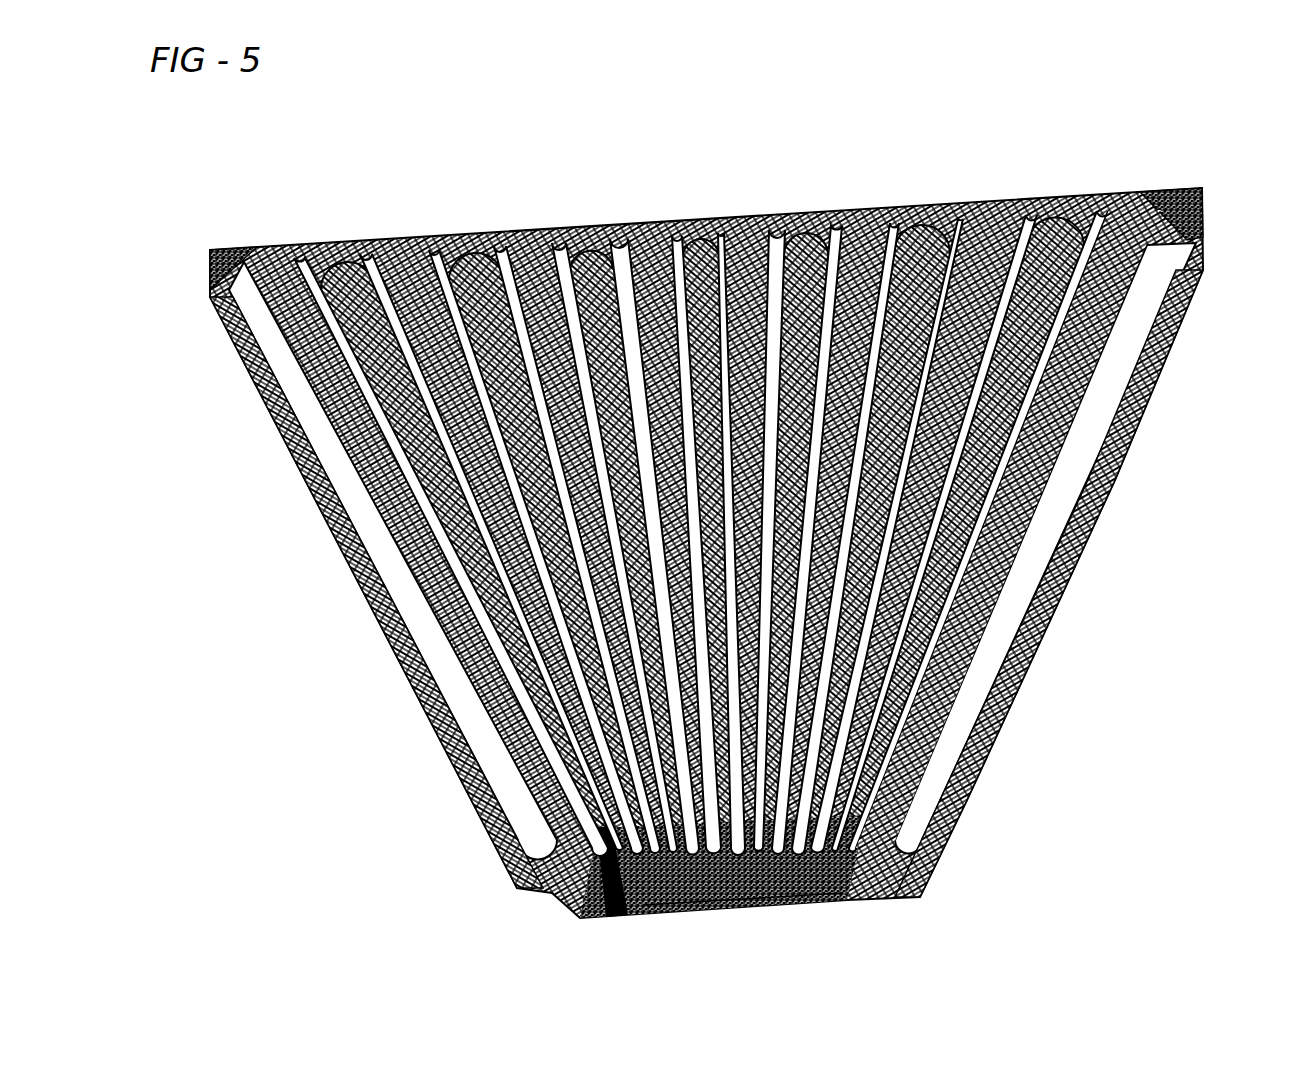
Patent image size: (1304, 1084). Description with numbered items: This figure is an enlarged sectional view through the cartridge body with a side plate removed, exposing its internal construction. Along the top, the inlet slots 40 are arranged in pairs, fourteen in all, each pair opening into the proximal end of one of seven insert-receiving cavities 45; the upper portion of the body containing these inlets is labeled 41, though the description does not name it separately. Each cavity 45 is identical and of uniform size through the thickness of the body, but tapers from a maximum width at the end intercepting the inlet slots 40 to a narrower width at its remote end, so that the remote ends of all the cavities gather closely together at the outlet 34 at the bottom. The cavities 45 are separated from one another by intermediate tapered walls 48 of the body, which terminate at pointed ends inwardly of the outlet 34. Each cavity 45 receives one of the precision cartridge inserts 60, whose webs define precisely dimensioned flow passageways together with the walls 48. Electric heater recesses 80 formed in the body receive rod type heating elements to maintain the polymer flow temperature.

The outlet 34 is at (792, 905).
The inlet slots 40 is at (460, 222).
The top plate 41 is at (1015, 198).
The insert-receiving cavity 45 is at (1072, 326).
The intermediate tapered walls 48 is at (948, 730).
The precision cartridge insert 60 is at (366, 248).
The electric heater recesses 80 is at (349, 580).